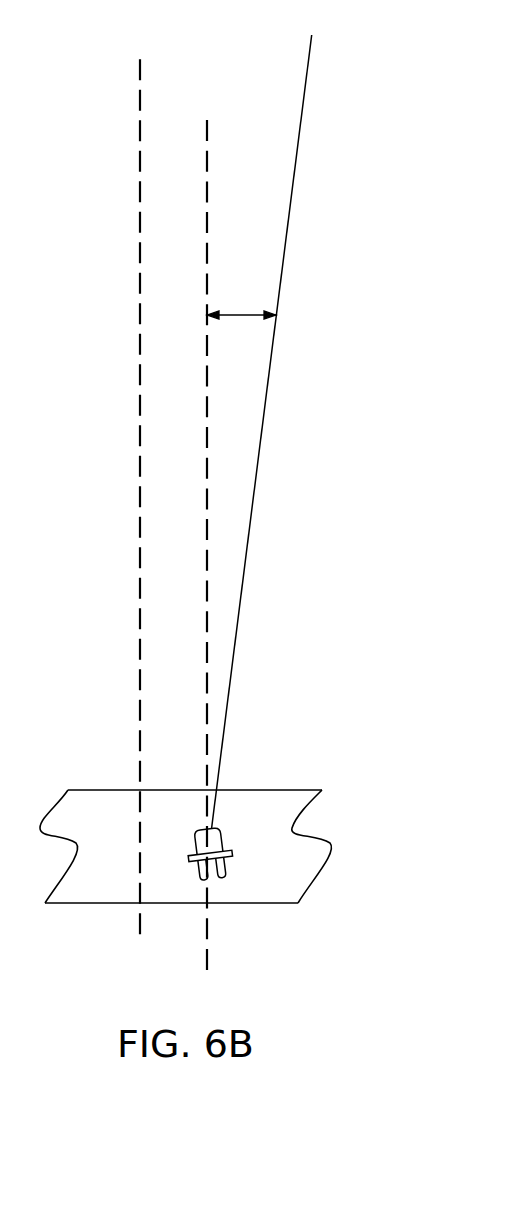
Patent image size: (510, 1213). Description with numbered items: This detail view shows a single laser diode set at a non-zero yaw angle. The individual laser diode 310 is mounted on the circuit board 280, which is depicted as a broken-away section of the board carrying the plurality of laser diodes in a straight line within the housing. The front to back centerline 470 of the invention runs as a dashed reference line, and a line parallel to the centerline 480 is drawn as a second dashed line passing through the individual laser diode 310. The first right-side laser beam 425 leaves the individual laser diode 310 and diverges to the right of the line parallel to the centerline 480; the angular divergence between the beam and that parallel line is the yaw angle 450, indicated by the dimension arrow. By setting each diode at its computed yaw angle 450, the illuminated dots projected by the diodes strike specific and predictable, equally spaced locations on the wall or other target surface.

The circuit board 280 is at (282, 903).
The individual laser diode 310 is at (223, 827).
The first right-side laser beam 425 is at (291, 205).
The yaw angle 450 is at (240, 318).
The front to back centerline 470 is at (140, 252).
The line parallel to the centerline 480 is at (207, 225).